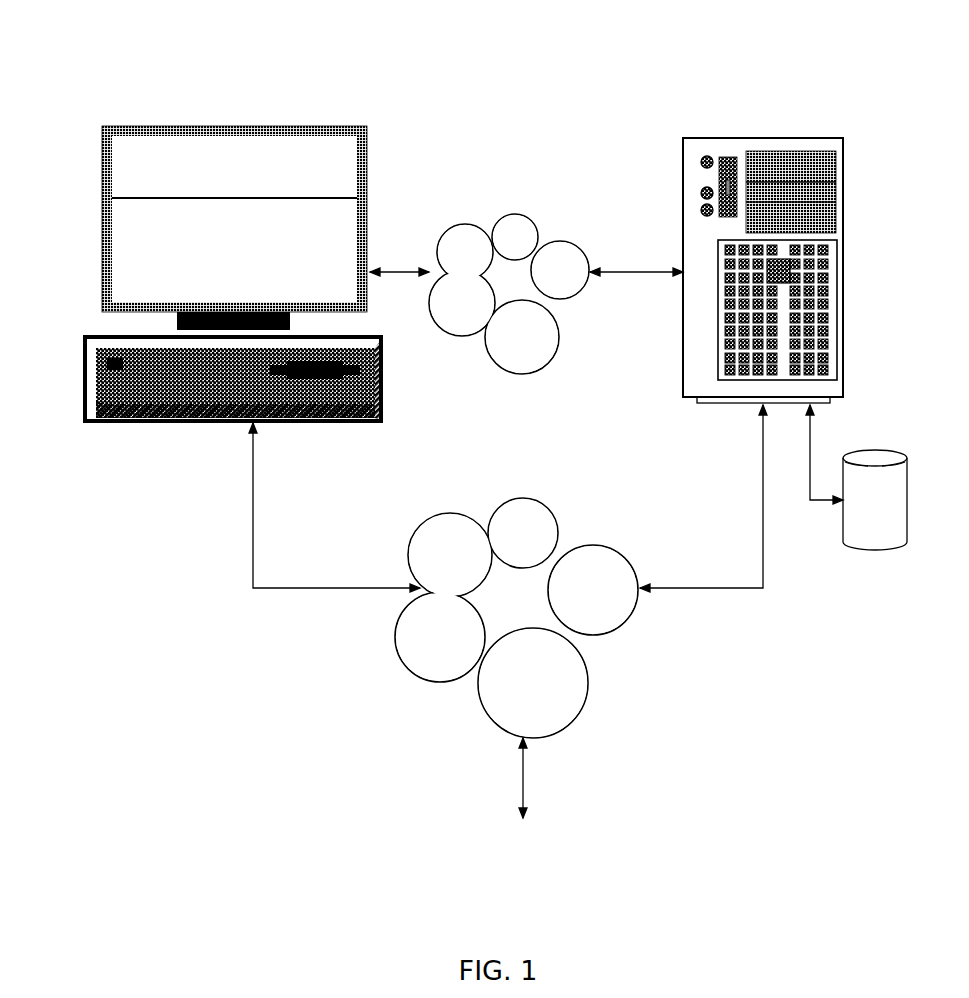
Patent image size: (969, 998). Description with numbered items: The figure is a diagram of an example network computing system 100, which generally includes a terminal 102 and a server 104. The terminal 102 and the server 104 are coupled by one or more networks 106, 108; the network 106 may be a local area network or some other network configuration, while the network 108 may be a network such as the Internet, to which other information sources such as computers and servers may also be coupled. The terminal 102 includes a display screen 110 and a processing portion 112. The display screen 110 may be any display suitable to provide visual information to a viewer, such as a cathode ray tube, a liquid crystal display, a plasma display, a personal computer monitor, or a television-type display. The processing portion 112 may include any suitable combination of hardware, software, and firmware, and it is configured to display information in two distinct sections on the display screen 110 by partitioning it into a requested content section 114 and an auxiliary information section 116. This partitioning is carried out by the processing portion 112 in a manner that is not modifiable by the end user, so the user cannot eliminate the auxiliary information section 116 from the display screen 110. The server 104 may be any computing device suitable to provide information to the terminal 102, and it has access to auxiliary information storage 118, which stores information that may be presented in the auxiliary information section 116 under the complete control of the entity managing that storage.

The network computing system 100 is at (458, 439).
The terminal 102 is at (196, 244).
The server 104 is at (732, 234).
The network 106 is at (509, 281).
The network 108 is at (495, 618).
The display screen 110 is at (207, 216).
The processing portion 112 is at (196, 379).
The requested content section 114 is at (202, 250).
The auxiliary information section 116 is at (202, 167).
The auxiliary information storage 118 is at (855, 518).